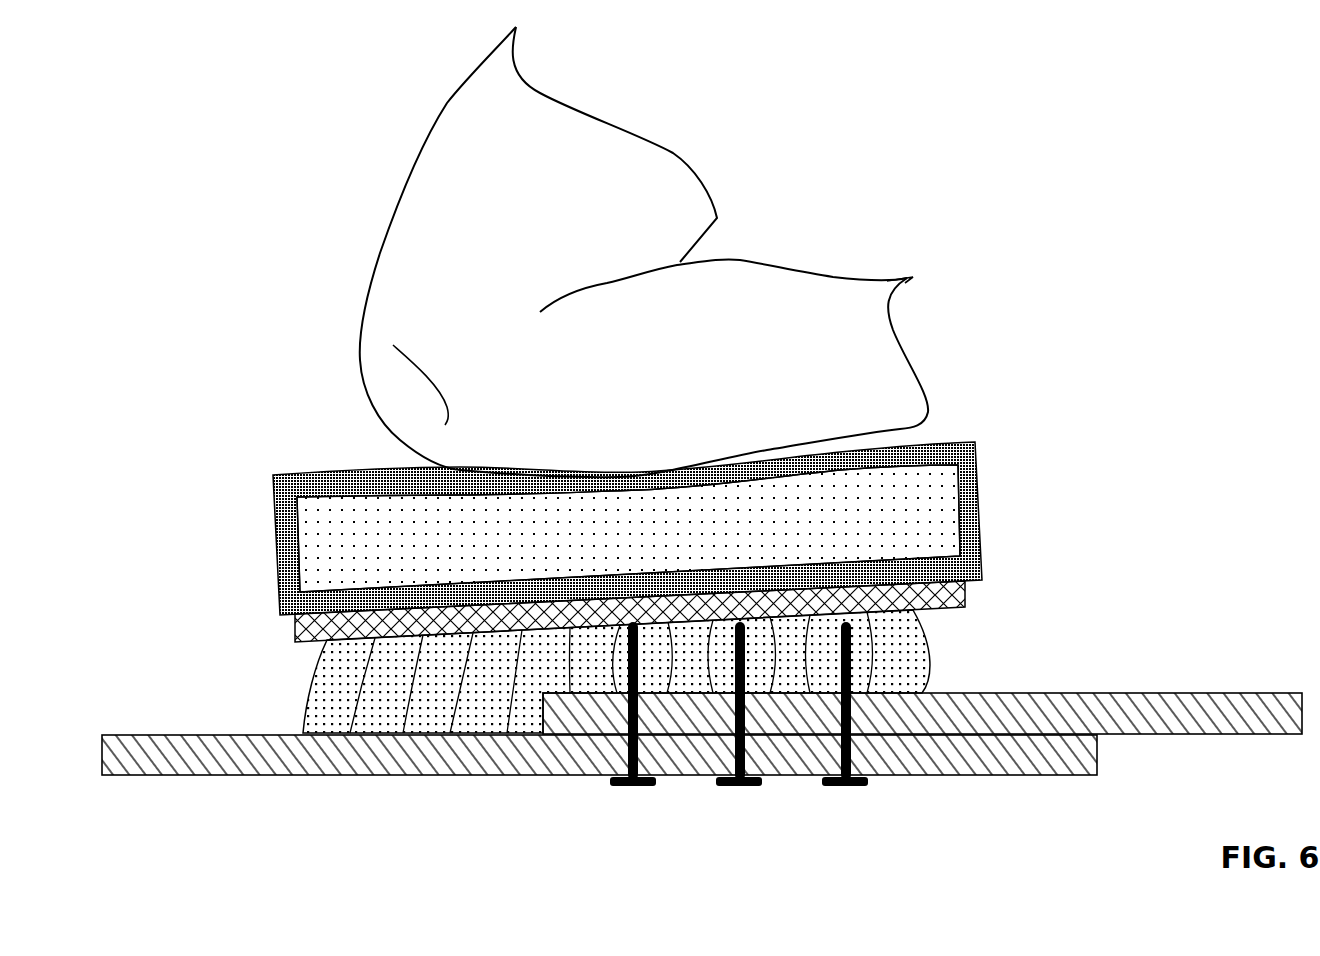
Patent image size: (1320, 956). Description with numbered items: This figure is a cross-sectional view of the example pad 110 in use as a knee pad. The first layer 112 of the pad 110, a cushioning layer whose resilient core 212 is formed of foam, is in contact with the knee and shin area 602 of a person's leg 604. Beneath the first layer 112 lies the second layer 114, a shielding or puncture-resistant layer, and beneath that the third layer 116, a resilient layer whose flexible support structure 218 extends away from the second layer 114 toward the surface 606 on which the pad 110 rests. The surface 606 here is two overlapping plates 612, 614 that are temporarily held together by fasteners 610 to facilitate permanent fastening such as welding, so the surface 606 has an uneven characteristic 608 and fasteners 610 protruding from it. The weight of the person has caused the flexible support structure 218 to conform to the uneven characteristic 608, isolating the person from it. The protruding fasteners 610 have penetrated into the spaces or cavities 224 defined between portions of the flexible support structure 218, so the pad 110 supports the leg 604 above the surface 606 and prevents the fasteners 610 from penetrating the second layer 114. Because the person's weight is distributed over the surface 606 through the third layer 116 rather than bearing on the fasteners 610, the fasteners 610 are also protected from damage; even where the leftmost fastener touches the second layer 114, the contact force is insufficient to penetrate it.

The pad 110 is at (970, 366).
The first layer 112 is at (307, 473).
The second layer 114 is at (297, 630).
The third layer 116 is at (306, 722).
The resilient core 212 is at (1002, 434).
The flexible support structure 218 is at (265, 696).
The spaces or cavities 224 is at (450, 672).
The knee and shin area 602 is at (733, 262).
The person's leg 604 is at (332, 239).
The surface 606 is at (183, 735).
The uneven characteristic 608 is at (550, 752).
The fasteners 610 is at (655, 785).
The plate 612 is at (248, 775).
The plate 614 is at (1218, 737).